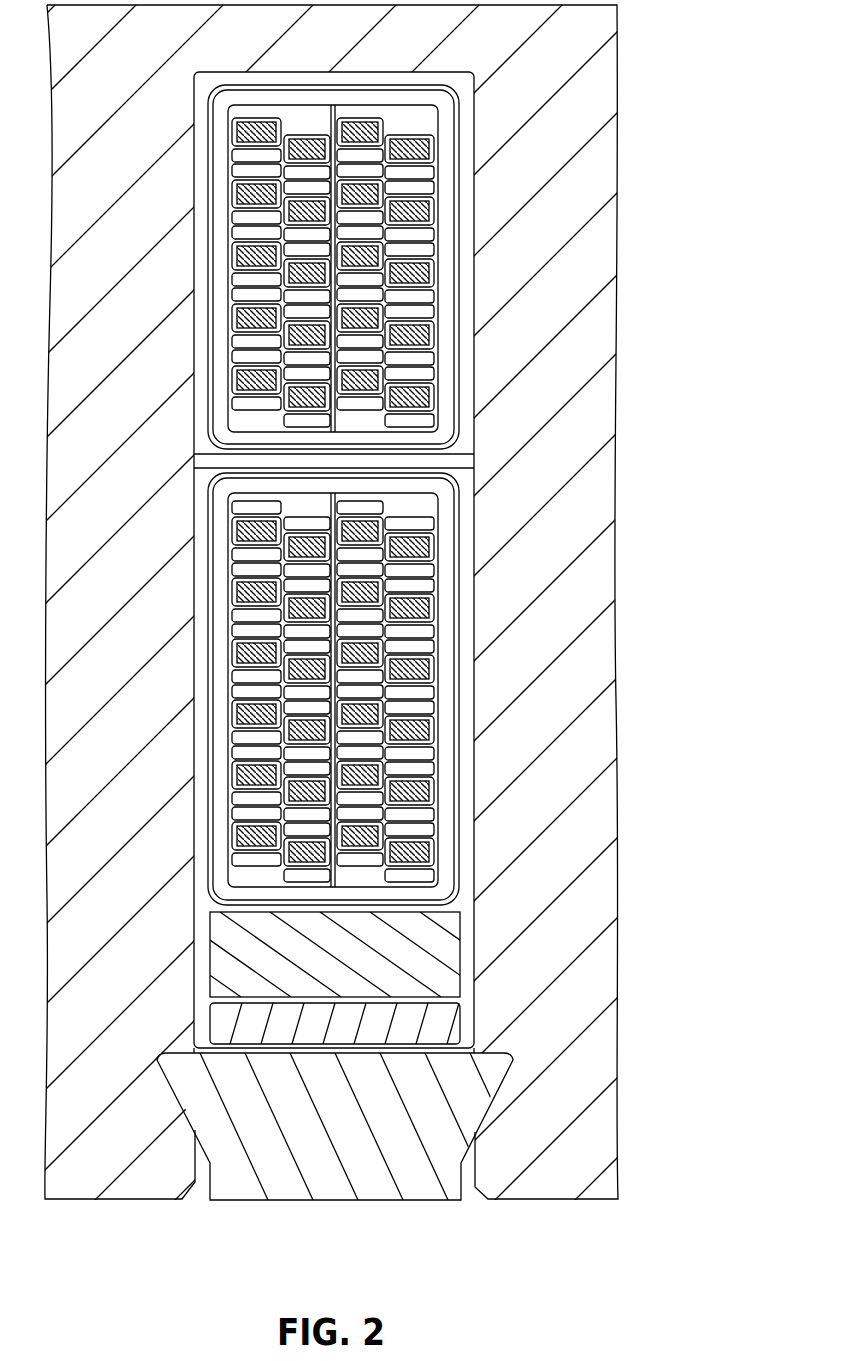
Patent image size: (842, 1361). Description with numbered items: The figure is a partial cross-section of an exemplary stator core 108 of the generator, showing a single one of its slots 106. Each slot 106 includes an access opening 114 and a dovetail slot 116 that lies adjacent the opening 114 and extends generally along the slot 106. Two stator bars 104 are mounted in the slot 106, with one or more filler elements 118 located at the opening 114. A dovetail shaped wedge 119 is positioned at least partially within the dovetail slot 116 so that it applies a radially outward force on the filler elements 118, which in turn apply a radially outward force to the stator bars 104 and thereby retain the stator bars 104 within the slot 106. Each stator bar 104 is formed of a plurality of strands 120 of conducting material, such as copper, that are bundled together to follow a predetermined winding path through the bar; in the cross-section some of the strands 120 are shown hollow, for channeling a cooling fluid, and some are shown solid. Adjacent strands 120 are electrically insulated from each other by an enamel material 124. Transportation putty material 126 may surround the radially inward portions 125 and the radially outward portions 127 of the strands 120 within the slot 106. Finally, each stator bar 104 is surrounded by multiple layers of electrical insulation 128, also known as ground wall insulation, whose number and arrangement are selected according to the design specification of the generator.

The stator bar 104 is at (420, 100).
The slot 106 is at (470, 537).
The stator core 108 is at (668, 276).
The access opening 114 is at (464, 1215).
The dovetail slot 116 is at (198, 1025).
The filler element 118 is at (198, 958).
The dovetail shaped wedge 119 is at (492, 1102).
The strand 120 is at (427, 703).
The enamel material 124 is at (410, 300).
The radially inward portion 125 is at (465, 868).
The transportation putty material 126 is at (237, 422).
The radially outward portion 127 is at (458, 130).
The electrical insulation 128 is at (292, 100).